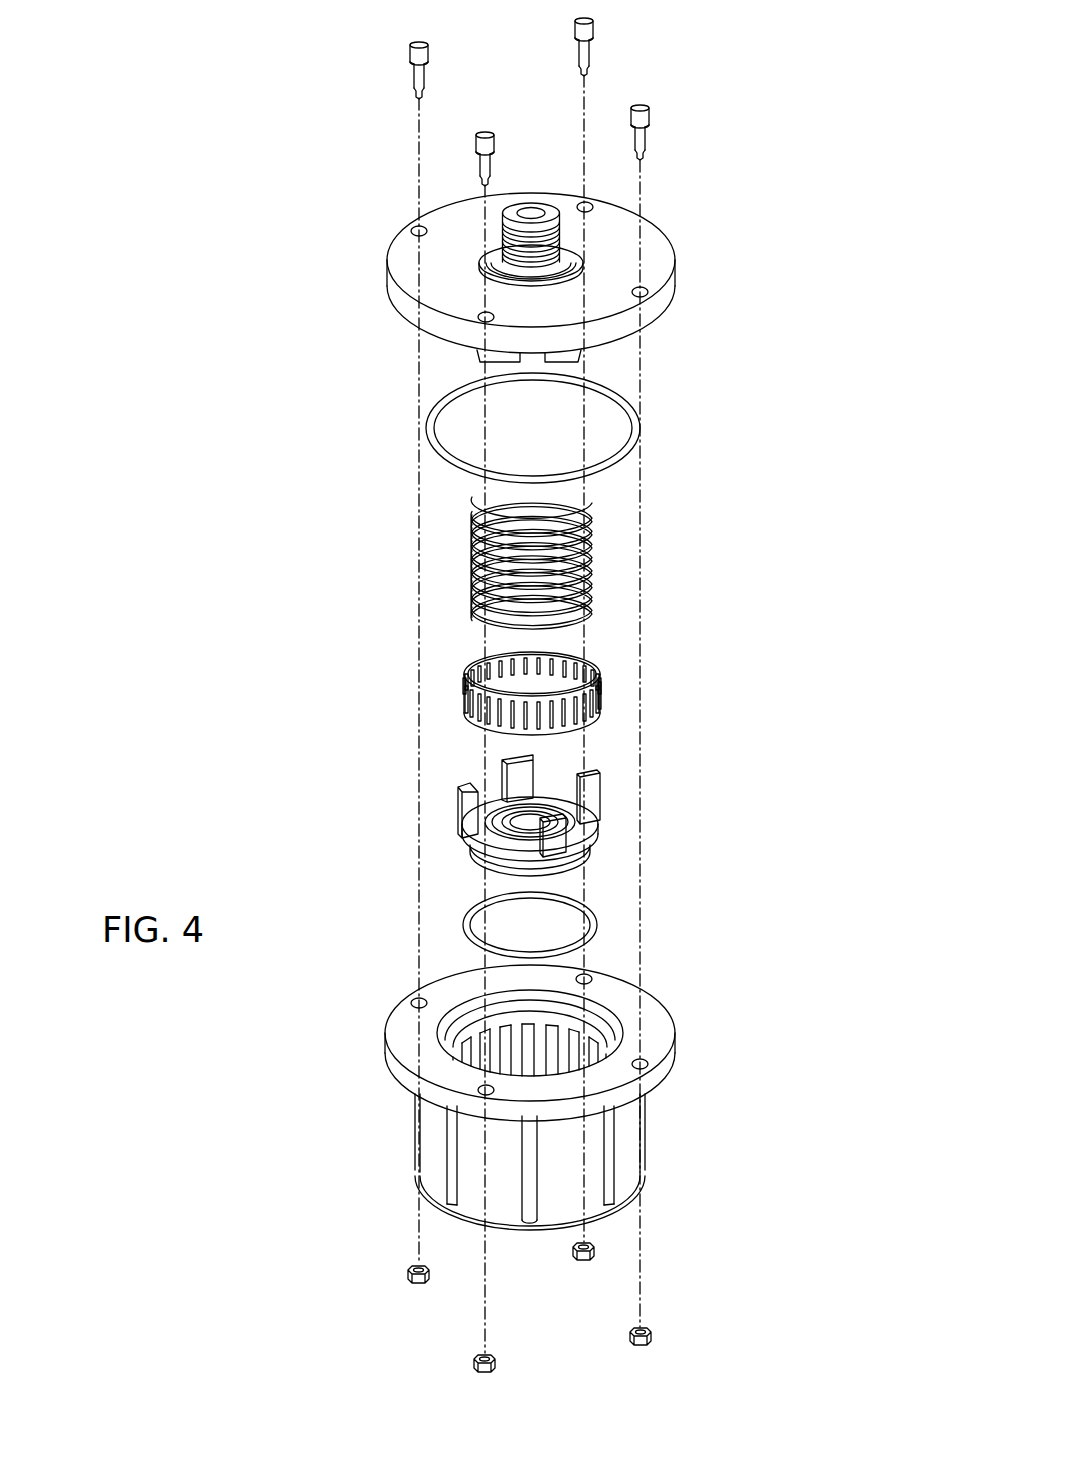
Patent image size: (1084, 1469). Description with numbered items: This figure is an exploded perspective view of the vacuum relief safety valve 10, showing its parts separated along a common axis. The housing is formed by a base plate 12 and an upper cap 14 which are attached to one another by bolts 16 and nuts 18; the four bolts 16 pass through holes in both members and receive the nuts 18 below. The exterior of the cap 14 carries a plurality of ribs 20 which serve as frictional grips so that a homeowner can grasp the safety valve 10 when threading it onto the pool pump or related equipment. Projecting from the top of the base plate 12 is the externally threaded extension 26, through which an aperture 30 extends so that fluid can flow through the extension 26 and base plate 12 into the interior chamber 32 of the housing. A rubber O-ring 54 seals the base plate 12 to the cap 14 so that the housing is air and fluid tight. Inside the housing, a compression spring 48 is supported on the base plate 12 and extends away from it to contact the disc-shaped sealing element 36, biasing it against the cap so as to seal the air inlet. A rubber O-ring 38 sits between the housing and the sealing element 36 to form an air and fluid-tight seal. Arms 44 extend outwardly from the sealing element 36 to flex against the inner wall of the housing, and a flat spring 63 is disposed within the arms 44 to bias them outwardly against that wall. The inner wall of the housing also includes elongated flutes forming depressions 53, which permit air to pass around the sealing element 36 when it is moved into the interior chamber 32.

The vacuum relief safety valve 10 is at (298, 605).
The base plate 12 is at (662, 249).
The upper cap 14 is at (403, 1142).
The bolts 16 is at (532, 96).
The nuts 18 is at (557, 1307).
The ribs 20 is at (561, 1162).
The extension 26 is at (464, 183).
The aperture 30 is at (509, 173).
The interior chamber 32 is at (535, 1011).
The sealing element 36 is at (663, 845).
The O-ring 38 is at (586, 925).
The arms 44 is at (580, 815).
The spring 48 is at (589, 563).
The depression 53 is at (483, 1011).
The O-ring 54 is at (564, 428).
The flat spring 63 is at (585, 687).